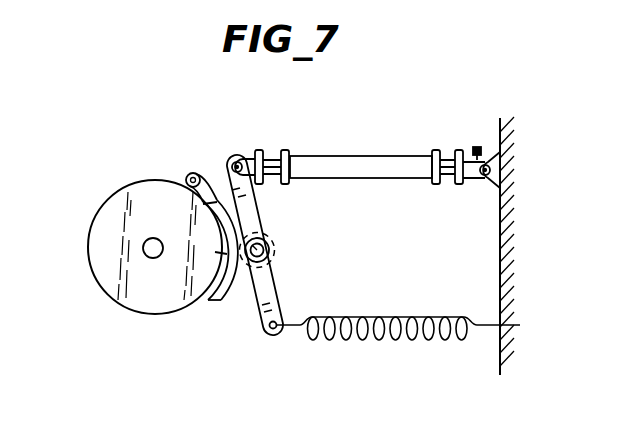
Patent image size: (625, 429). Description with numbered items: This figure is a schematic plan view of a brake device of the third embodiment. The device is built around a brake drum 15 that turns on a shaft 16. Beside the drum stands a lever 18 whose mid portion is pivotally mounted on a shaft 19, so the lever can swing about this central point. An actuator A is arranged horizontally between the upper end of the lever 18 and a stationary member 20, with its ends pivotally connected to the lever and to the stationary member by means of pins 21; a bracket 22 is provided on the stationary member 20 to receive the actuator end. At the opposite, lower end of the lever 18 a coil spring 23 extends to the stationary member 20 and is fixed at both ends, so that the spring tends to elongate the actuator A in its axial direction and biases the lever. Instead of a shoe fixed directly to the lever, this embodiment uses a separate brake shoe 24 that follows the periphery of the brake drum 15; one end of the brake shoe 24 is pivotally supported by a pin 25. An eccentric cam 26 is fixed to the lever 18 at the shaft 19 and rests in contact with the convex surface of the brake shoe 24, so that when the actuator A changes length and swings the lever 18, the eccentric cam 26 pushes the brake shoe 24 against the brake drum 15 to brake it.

The brake drum 15 is at (96, 283).
The shaft 16 is at (150, 245).
The lever 18 is at (272, 295).
The shaft 19 is at (265, 243).
The stationary member 20 is at (499, 262).
The pins 21 is at (237, 161).
The bracket 22 is at (492, 157).
The coil spring 23 is at (413, 333).
The brake shoe 24 is at (225, 302).
The pin 25 is at (191, 173).
The eccentric cam 26 is at (276, 251).
The actuator A is at (371, 155).